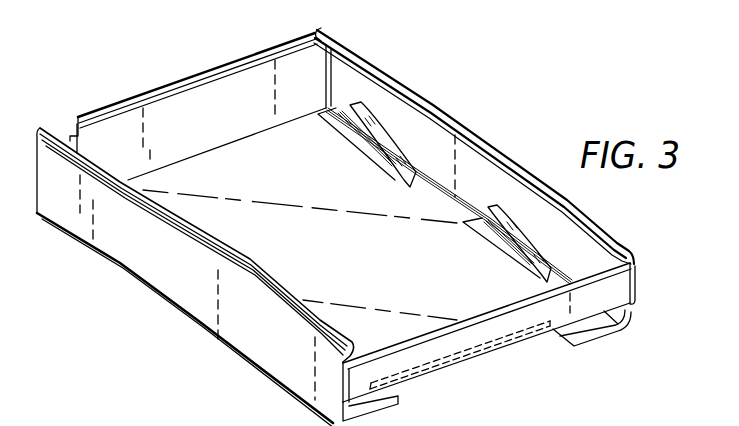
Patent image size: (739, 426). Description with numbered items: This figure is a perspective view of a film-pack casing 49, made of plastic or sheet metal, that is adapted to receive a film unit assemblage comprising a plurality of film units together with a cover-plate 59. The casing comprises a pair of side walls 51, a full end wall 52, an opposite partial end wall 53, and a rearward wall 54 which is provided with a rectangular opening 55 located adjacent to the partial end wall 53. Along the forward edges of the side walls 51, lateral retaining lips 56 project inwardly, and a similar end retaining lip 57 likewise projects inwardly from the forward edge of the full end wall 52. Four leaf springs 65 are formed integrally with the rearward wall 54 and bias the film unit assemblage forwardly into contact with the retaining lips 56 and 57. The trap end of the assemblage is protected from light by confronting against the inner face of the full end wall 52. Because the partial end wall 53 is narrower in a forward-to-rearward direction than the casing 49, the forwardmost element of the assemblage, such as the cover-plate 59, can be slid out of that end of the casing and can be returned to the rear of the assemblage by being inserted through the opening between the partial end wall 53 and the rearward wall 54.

The film-pack casing 49 is at (86, 232).
The side walls 51 is at (210, 313).
The full end wall 52 is at (204, 118).
The partial end wall 53 is at (403, 364).
The rearward wall 54 is at (356, 244).
The rectangular opening 55 is at (563, 338).
The lateral retaining lips 56 is at (480, 143).
The end retaining lip 57 is at (167, 84).
The cover-plate 59 is at (712, 417).
The leaf springs 65 is at (368, 123).